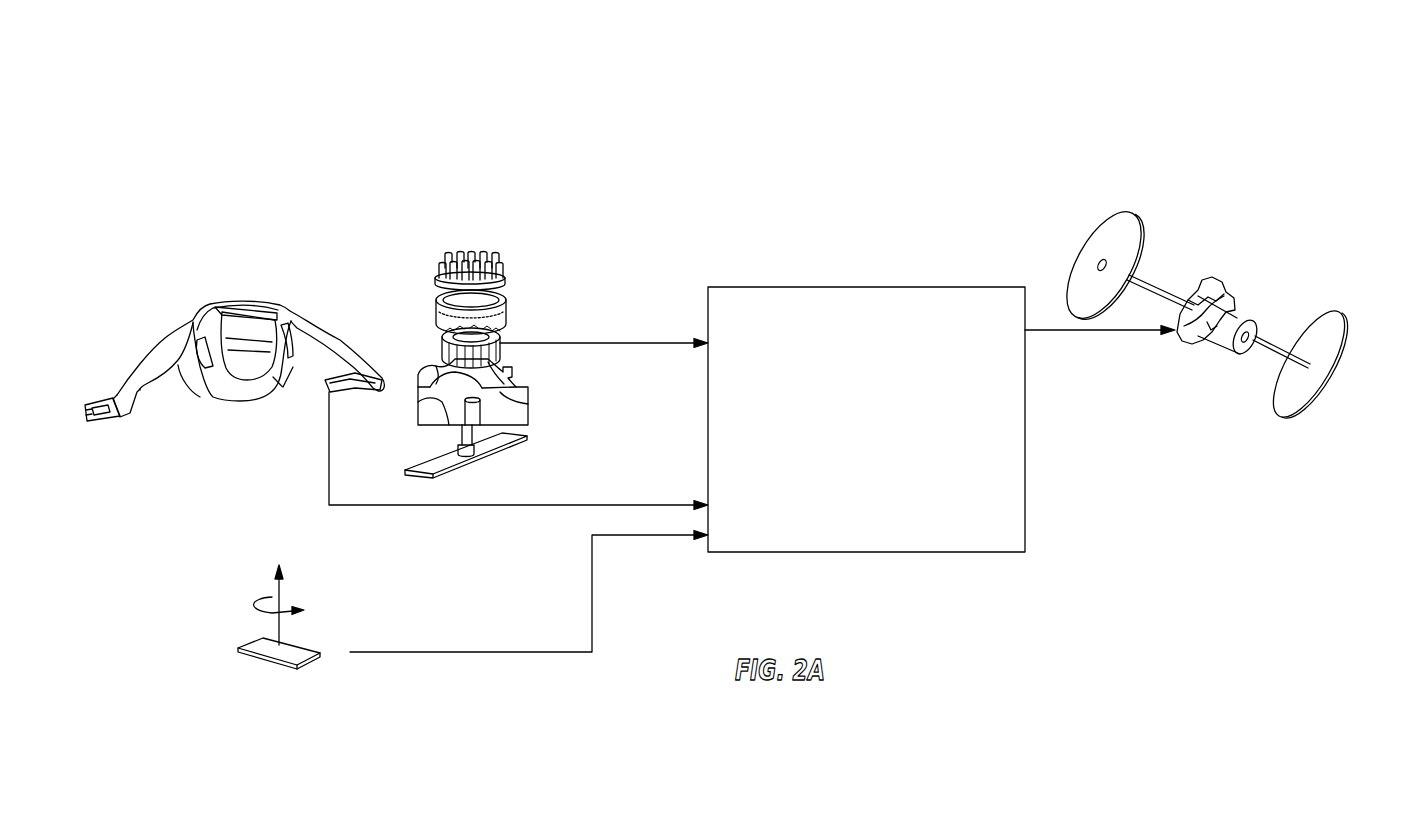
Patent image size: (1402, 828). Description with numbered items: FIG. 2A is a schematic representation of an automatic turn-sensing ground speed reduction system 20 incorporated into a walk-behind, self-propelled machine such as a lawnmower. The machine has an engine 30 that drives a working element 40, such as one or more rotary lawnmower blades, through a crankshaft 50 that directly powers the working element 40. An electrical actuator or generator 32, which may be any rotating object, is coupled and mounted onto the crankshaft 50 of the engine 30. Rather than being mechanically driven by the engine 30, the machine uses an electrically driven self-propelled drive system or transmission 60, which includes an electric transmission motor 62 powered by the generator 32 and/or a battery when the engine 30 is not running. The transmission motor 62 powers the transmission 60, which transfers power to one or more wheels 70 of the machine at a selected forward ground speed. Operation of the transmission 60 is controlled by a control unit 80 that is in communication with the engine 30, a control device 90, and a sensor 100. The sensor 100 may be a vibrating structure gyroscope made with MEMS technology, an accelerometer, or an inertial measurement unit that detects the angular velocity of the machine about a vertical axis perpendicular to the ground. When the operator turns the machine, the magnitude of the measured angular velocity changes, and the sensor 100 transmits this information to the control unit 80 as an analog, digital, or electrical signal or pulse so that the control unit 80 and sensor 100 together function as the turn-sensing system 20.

The automatic turn-sensing ground speed reduction system 20 is at (941, 96).
The engine 30 is at (461, 313).
The electrical actuator or generator 32 is at (500, 342).
The working element 40 is at (457, 462).
The crankshaft 50 is at (462, 432).
The transmission 60 is at (1206, 305).
The transmission motor 62 is at (1222, 352).
The wheels 70 is at (1118, 200).
The control unit 80 is at (866, 419).
The control device 90 is at (214, 283).
The sensor 100 is at (307, 678).